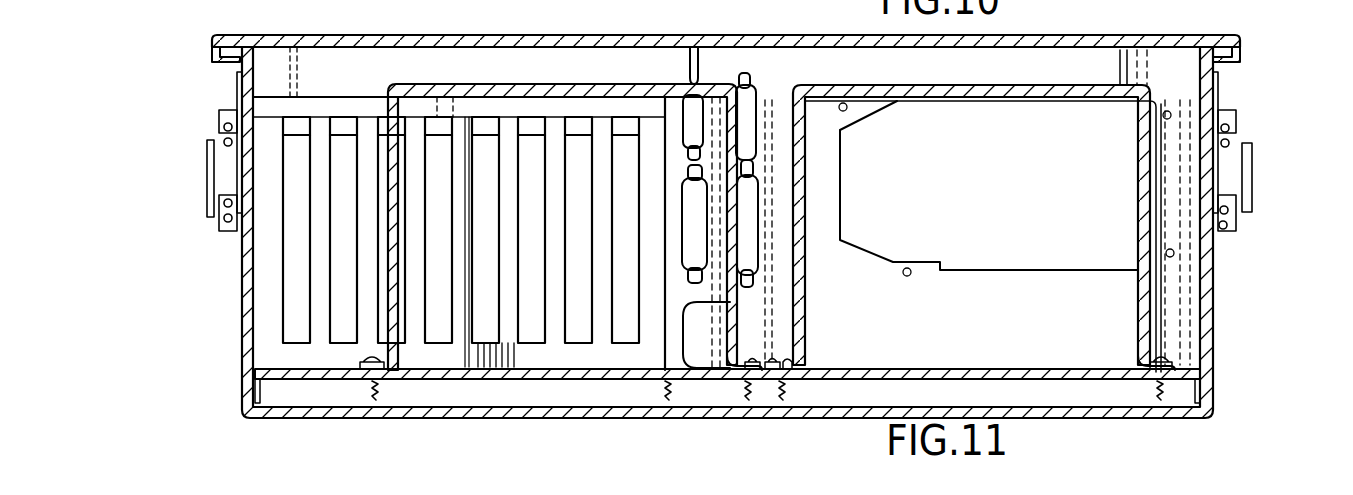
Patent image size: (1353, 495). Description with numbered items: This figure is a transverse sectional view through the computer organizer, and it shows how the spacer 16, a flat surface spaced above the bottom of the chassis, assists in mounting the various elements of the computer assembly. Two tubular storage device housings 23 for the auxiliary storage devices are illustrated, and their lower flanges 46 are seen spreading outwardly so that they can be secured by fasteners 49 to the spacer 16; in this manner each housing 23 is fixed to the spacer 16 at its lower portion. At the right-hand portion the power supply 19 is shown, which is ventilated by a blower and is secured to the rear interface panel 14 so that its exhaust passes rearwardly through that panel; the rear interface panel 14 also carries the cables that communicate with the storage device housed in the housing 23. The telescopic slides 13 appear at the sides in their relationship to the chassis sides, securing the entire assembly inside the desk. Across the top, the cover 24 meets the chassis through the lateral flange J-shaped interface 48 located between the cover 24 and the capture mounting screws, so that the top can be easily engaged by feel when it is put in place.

The telescopic slides 13 is at (210, 163).
The rear interface panel 14 is at (615, 65).
The spacer 16 is at (1000, 364).
The power supply 19 is at (1250, 194).
The storage device housing 23 is at (498, 88).
The cover 24 is at (537, 33).
The lower flanges 46 is at (762, 357).
The lateral flange J-shaped interface 48 is at (212, 38).
The fasteners 49 is at (787, 357).